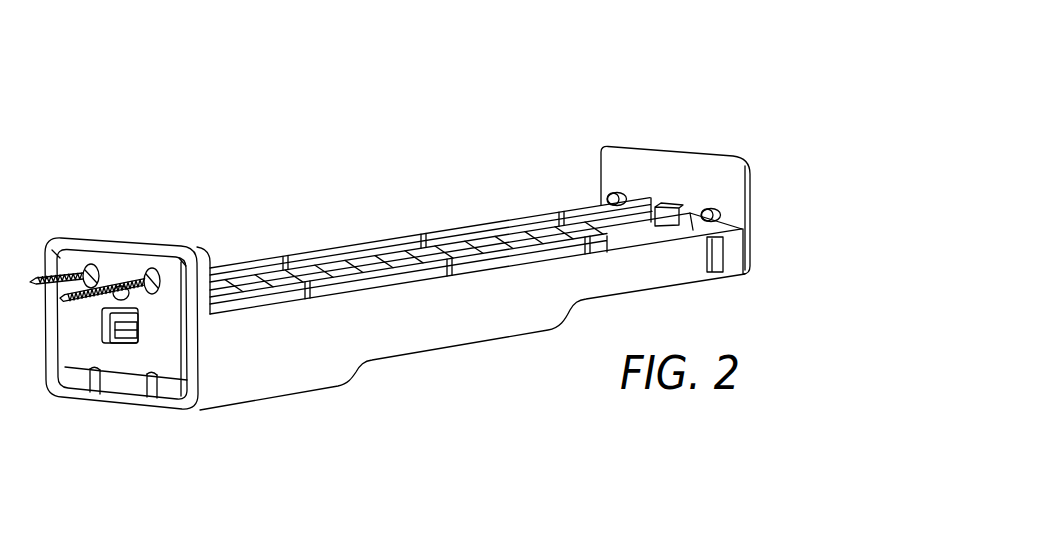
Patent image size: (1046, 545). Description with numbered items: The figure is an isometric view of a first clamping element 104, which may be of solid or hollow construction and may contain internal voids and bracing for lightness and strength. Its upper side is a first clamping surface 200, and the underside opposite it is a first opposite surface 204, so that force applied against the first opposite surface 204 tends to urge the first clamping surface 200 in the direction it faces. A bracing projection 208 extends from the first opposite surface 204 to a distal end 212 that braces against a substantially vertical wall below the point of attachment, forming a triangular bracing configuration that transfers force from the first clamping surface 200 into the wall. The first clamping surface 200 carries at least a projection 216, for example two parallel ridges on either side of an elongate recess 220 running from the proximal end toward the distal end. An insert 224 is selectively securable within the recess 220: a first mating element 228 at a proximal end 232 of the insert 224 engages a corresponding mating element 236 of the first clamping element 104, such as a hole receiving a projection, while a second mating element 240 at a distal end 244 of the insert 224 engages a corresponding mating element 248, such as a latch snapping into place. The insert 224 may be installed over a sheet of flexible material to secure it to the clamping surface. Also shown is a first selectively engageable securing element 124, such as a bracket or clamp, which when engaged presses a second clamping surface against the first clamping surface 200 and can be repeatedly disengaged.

The first clamping element 104 is at (196, 90).
The first selectively engageable securing element 124 is at (685, 157).
The first clamping surface 200 is at (400, 247).
The first opposite surface 204 is at (377, 361).
The bracing projection 208 is at (227, 390).
The distal end 212 is at (157, 413).
The projection 216 is at (607, 248).
The recess 220 is at (457, 247).
The insert 224 is at (287, 268).
The first mating element 228 is at (112, 291).
The proximal end 232 is at (130, 313).
The corresponding mating element 236 is at (120, 305).
The second mating element 240 is at (683, 213).
The distal end 244 is at (668, 213).
The corresponding mating element 248 is at (684, 221).